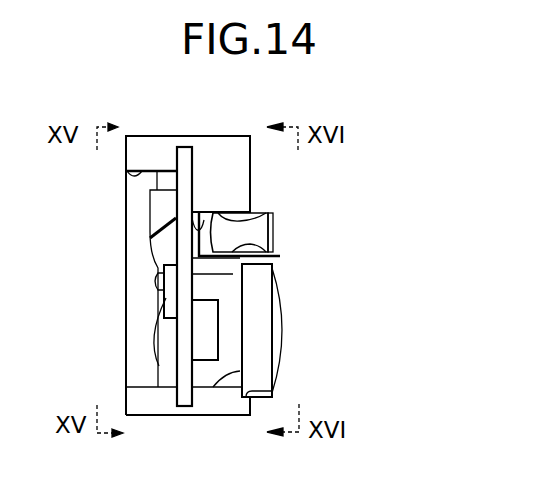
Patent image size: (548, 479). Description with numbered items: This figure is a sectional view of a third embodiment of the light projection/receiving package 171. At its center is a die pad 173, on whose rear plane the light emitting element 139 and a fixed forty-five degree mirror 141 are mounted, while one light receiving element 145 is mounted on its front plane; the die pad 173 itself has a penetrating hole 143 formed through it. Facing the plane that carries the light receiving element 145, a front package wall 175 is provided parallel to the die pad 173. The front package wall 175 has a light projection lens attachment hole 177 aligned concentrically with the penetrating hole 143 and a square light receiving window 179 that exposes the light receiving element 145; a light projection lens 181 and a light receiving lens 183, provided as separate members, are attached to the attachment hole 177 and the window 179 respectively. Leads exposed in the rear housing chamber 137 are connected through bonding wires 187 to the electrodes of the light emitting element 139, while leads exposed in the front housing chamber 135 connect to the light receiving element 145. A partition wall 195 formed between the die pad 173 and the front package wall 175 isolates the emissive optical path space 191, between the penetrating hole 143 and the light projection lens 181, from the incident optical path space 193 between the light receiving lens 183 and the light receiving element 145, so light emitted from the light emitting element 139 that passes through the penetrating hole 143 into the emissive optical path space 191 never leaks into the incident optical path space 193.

The light projection/receiving package 171 is at (368, 160).
The die pad 173 is at (178, 393).
The front package wall 175 is at (250, 172).
The penetrating hole 143 is at (197, 228).
The rear housing chamber 137 is at (133, 178).
The fixed 45° mirror 141 is at (150, 201).
The emissive optical path space 191 is at (190, 239).
The light emitting element 139 is at (154, 281).
The bonding wires 187 is at (153, 337).
The light projection lens attachment hole 177 is at (254, 217).
The light projection lens 181 is at (262, 232).
The partition wall 195 is at (272, 259).
The light receiving lens 183 is at (258, 294).
The incident optical path space 193 is at (235, 324).
The light receiving element 145 is at (208, 345).
The front housing chamber 135 is at (240, 371).
The light receiving window 179 is at (252, 391).